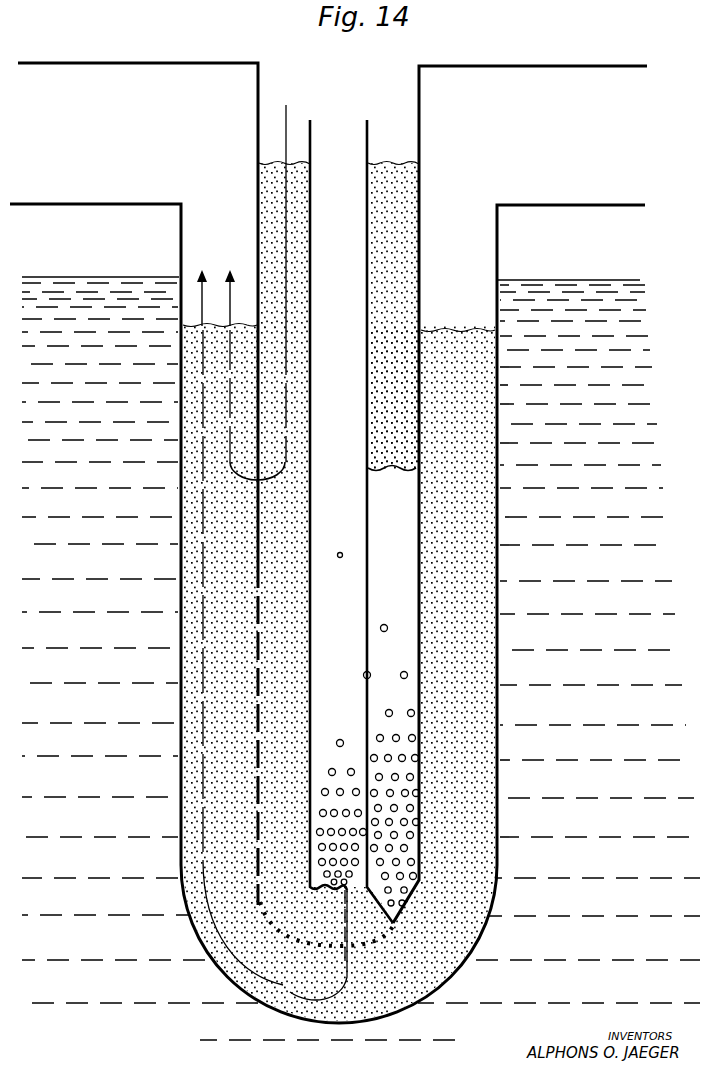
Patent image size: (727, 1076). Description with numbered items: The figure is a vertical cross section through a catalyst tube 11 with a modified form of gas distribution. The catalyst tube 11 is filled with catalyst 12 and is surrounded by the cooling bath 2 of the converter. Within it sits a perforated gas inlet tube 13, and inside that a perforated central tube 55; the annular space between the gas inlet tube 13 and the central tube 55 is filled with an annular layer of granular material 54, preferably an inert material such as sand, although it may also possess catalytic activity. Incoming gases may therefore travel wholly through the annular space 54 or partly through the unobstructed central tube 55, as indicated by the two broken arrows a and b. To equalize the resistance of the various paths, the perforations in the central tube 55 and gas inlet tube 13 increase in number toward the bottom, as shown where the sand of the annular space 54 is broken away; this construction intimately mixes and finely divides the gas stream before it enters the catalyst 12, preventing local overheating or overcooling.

The cooling bath 2 is at (555, 279).
The catalyst tube 11 is at (499, 222).
The catalyst 12 is at (452, 347).
The gas inlet tube 13 is at (421, 122).
The annular layer of granular material 54 is at (402, 226).
The central tube 55 is at (366, 128).
The gas path a is at (286, 206).
The gas path b is at (203, 626).